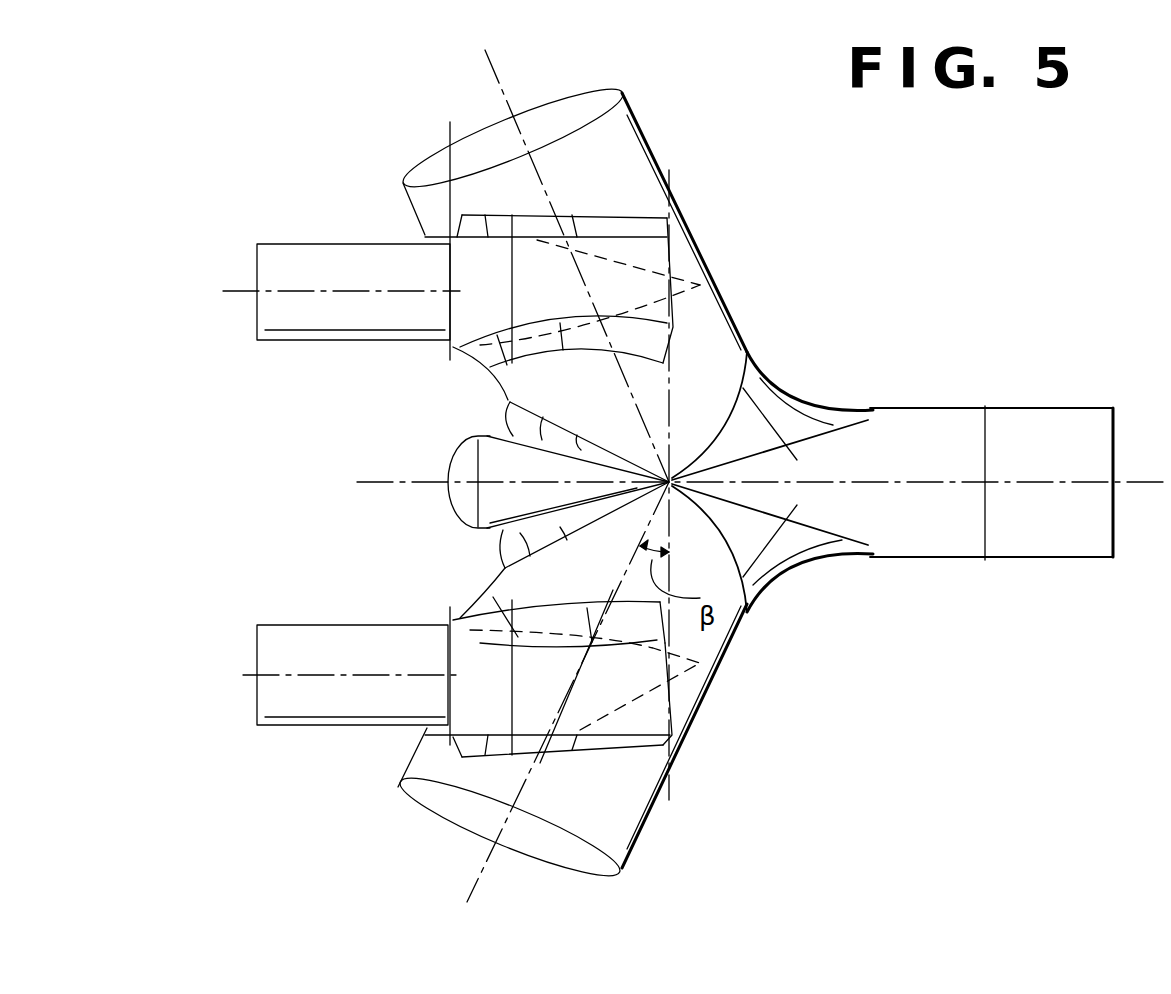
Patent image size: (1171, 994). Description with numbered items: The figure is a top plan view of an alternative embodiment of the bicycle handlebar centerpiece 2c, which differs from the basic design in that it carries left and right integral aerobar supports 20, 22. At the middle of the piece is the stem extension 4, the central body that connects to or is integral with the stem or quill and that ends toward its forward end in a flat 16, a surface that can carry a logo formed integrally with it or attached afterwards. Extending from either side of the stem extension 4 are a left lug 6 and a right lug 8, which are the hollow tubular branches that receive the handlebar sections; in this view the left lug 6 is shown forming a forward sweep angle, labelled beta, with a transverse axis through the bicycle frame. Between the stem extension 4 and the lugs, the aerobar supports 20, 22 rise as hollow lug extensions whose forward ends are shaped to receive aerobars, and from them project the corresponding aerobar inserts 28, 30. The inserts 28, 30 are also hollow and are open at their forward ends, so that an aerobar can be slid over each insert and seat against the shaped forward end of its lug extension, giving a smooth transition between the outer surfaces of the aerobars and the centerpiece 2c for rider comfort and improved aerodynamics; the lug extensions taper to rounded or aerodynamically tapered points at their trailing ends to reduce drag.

The centerpiece 2c is at (893, 229).
The stem extension 4 is at (899, 437).
The left lug 6 is at (647, 780).
The right lug 8 is at (640, 187).
The flat 16 is at (447, 490).
The left aerobar support 20 is at (640, 700).
The right aerobar support 22 is at (566, 285).
The aerobar insert 28 is at (312, 707).
The aerobar insert 30 is at (300, 330).